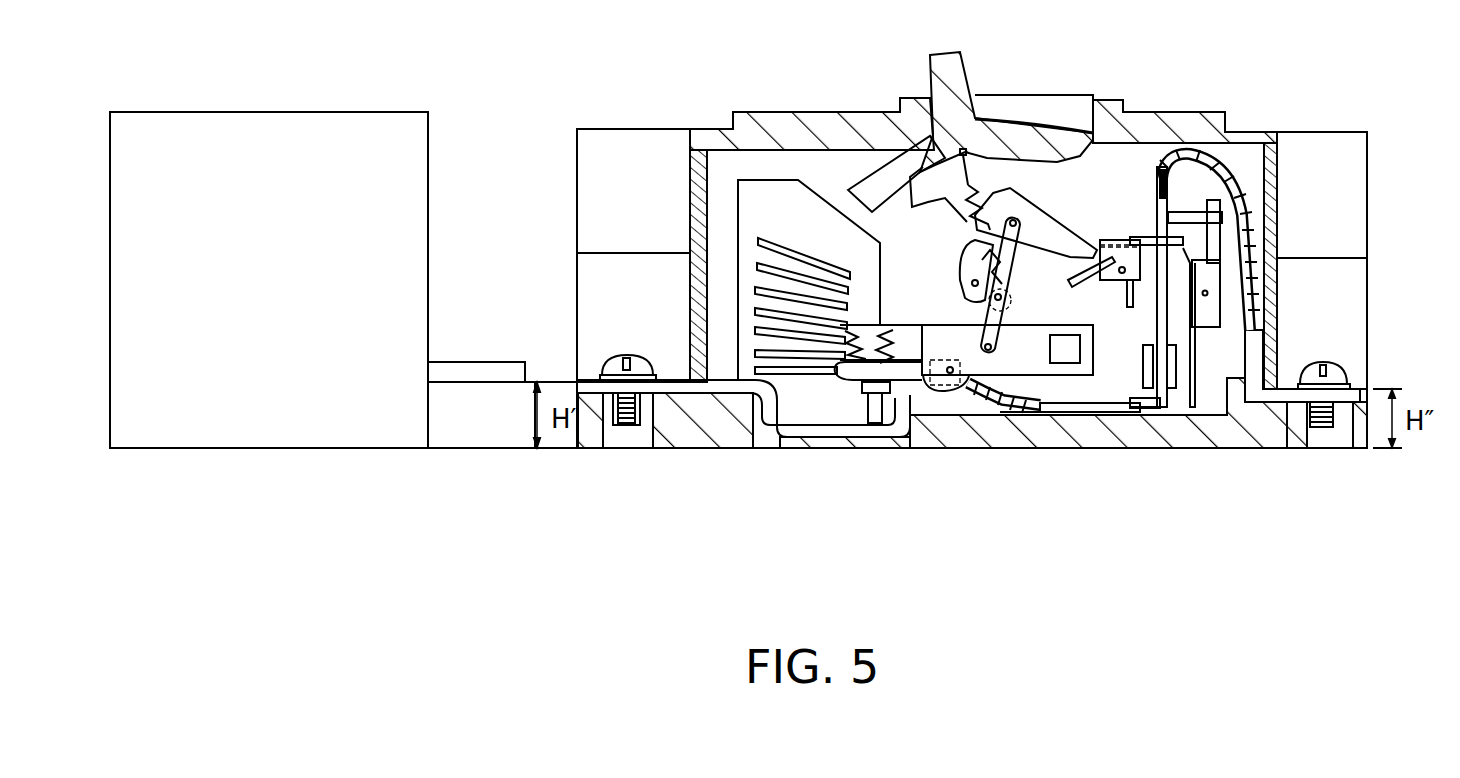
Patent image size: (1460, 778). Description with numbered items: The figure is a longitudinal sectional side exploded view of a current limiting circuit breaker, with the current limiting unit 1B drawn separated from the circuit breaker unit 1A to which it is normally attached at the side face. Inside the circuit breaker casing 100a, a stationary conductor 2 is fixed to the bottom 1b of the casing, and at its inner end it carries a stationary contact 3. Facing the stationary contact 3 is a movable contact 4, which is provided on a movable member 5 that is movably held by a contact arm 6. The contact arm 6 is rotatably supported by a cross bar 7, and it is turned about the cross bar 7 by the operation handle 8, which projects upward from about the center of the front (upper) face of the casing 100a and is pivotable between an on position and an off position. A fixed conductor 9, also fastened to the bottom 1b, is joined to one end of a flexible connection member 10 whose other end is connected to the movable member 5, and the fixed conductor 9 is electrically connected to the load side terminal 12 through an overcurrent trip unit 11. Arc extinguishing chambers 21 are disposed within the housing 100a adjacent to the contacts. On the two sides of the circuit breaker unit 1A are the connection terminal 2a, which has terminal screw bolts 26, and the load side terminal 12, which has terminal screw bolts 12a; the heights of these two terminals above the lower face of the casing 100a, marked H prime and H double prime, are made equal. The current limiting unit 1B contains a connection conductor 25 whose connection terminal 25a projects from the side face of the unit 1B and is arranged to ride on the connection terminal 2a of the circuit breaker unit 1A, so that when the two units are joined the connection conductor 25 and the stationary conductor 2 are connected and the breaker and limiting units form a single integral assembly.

The current limiting unit 1B is at (240, 450).
The connection conductor 25 is at (456, 360).
The connection terminal 25a is at (492, 376).
The terminal screw bolt 26 is at (610, 368).
The connection terminal 2a is at (612, 395).
The stationary conductor 2 is at (717, 387).
The arc extinguishing chamber 21 is at (808, 267).
The operation handle 8 is at (955, 88).
The circuit breaker unit 1A is at (1157, 123).
The circuit breaker casing 100a is at (1210, 112).
The overcurrent trip unit 11 is at (1187, 250).
The terminal screw bolt 12a is at (1337, 372).
The stationary contact 3 is at (882, 415).
The movable contact 4 is at (895, 395).
The movable member 5 is at (912, 375).
The flexible connection member 10 is at (995, 408).
The contact arm 6 is at (1042, 363).
The fixed conductor 9 is at (1070, 352).
The cross bar 7 is at (1143, 393).
The bottom 1b is at (1210, 443).
The load side terminal 12 is at (1313, 428).